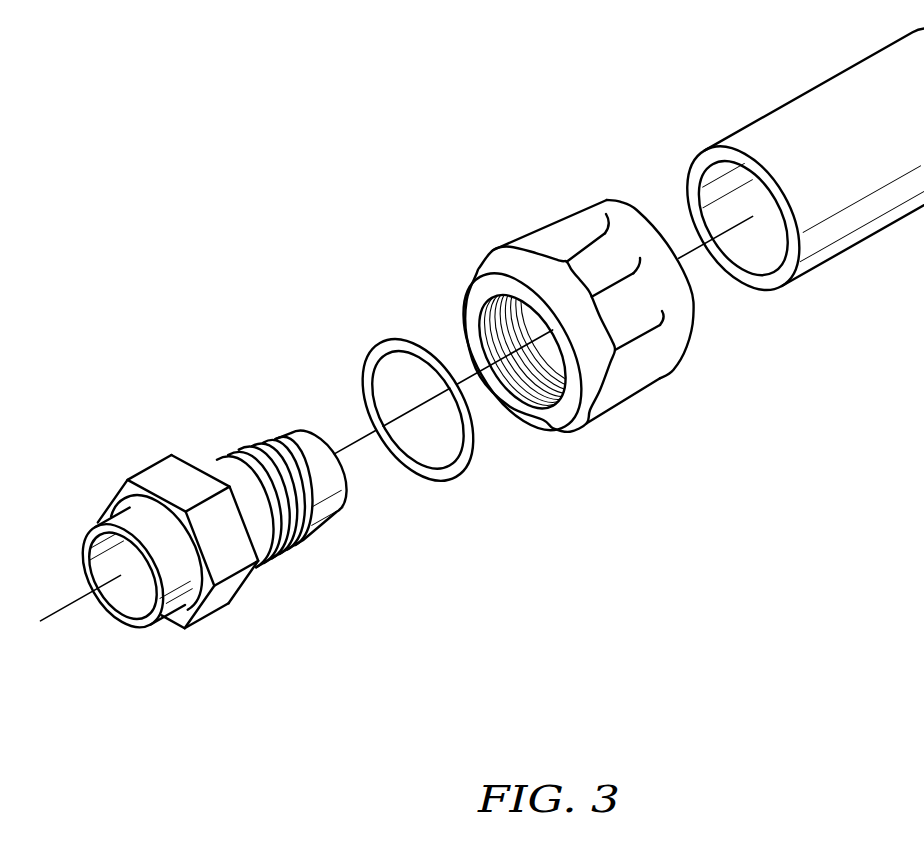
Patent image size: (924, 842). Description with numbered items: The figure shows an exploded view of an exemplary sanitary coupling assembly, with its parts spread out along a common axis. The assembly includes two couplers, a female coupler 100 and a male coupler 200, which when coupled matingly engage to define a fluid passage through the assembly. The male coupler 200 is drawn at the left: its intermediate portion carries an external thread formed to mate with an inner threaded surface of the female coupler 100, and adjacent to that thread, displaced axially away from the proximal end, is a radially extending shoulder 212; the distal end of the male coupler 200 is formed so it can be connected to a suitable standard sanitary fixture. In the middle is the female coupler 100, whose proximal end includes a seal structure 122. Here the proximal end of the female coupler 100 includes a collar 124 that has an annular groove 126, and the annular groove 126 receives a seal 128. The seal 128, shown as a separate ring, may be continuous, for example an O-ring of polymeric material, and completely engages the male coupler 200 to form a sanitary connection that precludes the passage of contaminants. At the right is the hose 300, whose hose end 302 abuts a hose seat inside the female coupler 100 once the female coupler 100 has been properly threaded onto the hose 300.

The female coupler 100 is at (528, 233).
The seal structure 122 is at (473, 265).
The collar 124 is at (573, 420).
The annular groove 126 is at (540, 413).
The seal 128 is at (447, 472).
The male coupler 200 is at (140, 468).
The shoulder 212 is at (183, 452).
The hose 300 is at (777, 107).
The hose end 302 is at (700, 152).